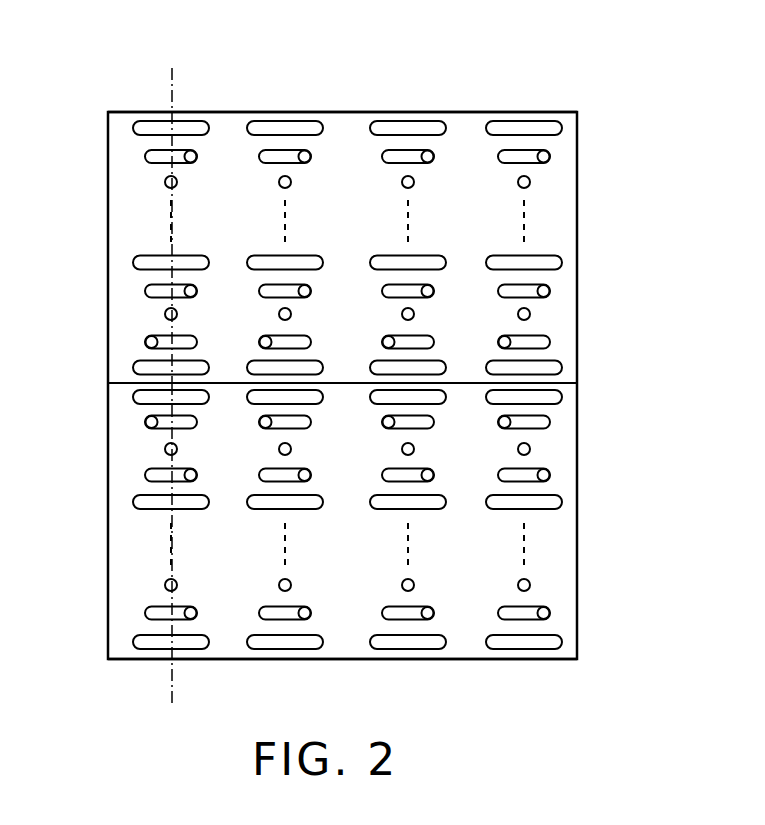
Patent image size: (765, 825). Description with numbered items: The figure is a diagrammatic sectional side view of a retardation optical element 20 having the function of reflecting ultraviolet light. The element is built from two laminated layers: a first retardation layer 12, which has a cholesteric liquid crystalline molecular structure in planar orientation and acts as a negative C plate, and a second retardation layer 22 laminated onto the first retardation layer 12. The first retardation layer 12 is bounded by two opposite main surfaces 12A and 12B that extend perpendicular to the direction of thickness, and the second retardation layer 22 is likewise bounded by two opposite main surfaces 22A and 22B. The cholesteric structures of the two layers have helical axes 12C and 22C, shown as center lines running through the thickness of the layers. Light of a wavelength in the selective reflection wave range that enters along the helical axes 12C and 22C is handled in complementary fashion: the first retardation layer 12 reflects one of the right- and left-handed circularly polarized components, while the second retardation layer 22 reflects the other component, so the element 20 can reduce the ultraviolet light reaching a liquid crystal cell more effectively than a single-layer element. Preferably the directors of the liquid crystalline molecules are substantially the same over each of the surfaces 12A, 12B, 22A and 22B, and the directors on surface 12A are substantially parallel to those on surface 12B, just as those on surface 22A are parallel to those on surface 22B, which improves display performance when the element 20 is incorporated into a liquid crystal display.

The retardation optical element 20 is at (406, 92).
The second retardation layer 22 is at (566, 229).
The main surface of the second retardation layer 22A is at (121, 383).
The main surface of the second retardation layer 22B is at (131, 112).
The helical axis 22C is at (172, 86).
The first retardation layer 12 is at (566, 455).
The main surface of the first retardation layer 12A is at (545, 661).
The main surface of the first retardation layer 12B is at (568, 384).
The helical axis 12C is at (172, 678).